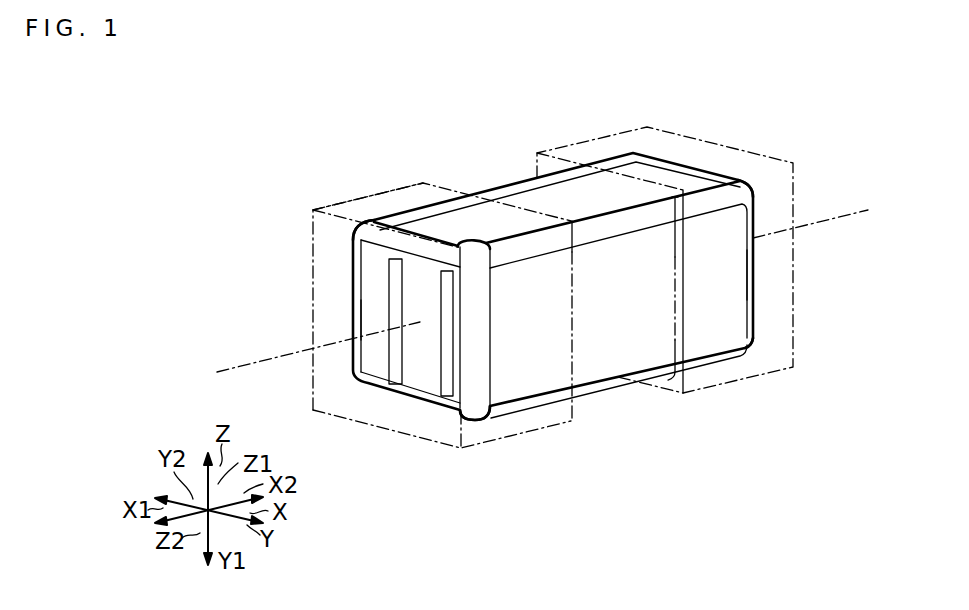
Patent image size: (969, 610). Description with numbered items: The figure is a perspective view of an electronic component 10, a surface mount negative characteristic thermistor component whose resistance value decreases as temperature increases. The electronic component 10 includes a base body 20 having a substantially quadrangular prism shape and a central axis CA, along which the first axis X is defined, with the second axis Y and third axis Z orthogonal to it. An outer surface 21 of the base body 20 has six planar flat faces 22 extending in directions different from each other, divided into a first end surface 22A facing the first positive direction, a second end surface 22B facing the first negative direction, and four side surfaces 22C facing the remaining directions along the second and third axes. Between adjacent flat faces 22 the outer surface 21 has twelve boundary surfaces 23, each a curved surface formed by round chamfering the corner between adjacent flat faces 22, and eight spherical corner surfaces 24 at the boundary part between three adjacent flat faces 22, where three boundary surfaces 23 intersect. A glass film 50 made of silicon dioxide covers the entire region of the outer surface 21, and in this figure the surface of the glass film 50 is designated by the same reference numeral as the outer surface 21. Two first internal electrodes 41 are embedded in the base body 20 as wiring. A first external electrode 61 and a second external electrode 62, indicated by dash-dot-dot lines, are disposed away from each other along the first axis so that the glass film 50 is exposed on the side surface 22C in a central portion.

The electronic component 10 is at (345, 152).
The base body 20 is at (456, 142).
The outer surface 21 is at (452, 138).
The flat face 22 is at (453, 506).
The first end surface 22A is at (427, 377).
The second end surface 22B is at (768, 298).
The side surface 22C is at (513, 192).
The boundary surface 23 is at (358, 250).
The corner surface 24 is at (473, 247).
The first internal electrode 41 is at (403, 319).
The glass film 50 is at (675, 292).
The first external electrode 61 is at (397, 432).
The second external electrode 62 is at (750, 378).
The central axis CA is at (247, 360).